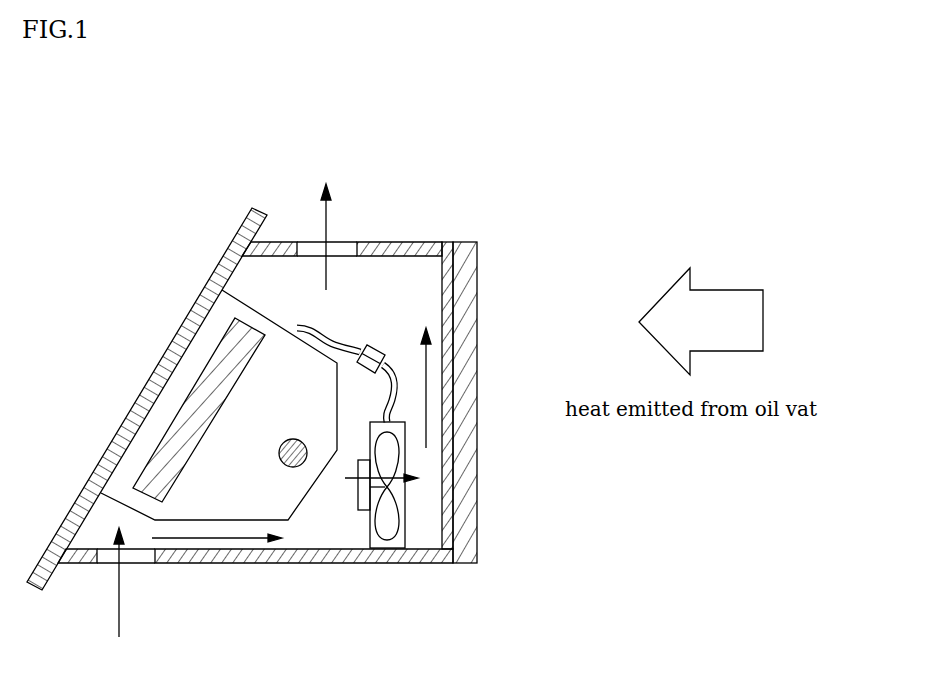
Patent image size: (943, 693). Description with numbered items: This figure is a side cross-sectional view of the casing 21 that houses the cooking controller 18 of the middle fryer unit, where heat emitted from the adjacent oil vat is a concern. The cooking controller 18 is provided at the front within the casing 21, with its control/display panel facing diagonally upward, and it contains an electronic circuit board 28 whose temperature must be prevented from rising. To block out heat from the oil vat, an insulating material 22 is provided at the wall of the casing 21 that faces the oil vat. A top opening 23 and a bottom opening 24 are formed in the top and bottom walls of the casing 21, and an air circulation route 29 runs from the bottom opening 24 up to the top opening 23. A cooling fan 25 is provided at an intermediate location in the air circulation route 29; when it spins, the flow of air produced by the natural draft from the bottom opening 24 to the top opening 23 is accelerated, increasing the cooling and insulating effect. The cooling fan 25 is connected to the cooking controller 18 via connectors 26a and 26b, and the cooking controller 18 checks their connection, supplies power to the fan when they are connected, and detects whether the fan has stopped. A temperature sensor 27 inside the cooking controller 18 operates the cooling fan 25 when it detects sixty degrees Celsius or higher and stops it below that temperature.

The cooking controller 18 is at (277, 357).
The casing 21 is at (356, 563).
The insulating material 22 is at (478, 495).
The top opening 23 is at (352, 247).
The bottom opening 24 is at (150, 565).
The cooling fan 25 is at (370, 527).
The connector 26a is at (367, 343).
The connector 26b is at (387, 357).
The temperature sensor 27 is at (287, 467).
The electronic circuit board 28 is at (200, 418).
The air circulation route 29 is at (413, 310).